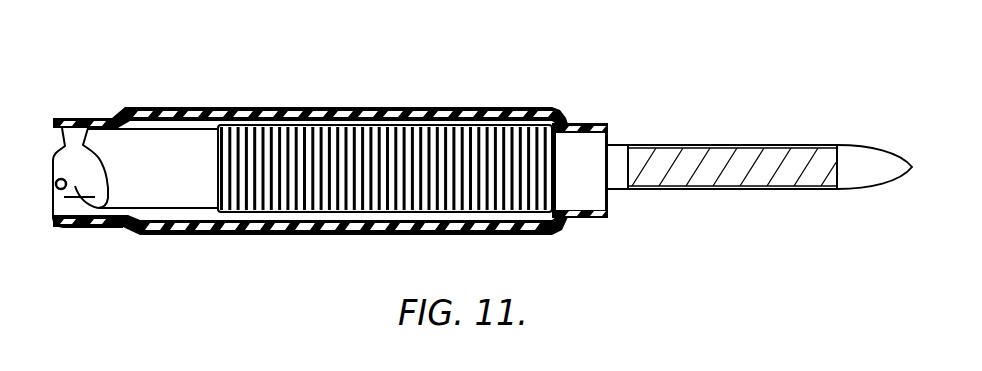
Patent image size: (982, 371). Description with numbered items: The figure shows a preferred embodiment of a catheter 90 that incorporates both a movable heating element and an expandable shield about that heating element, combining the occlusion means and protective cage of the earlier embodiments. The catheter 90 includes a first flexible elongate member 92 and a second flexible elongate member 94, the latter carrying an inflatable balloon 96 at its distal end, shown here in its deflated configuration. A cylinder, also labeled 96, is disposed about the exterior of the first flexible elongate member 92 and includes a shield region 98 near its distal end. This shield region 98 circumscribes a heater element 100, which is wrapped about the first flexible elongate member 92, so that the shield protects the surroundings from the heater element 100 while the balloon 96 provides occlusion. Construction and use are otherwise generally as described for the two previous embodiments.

The catheter 90 is at (433, 77).
The first flexible elongate member 92 is at (153, 190).
The second flexible elongate member 94 is at (79, 193).
The inflatable balloon 96 is at (88, 117).
The shield region 98 is at (326, 106).
The heater element 100 is at (341, 192).